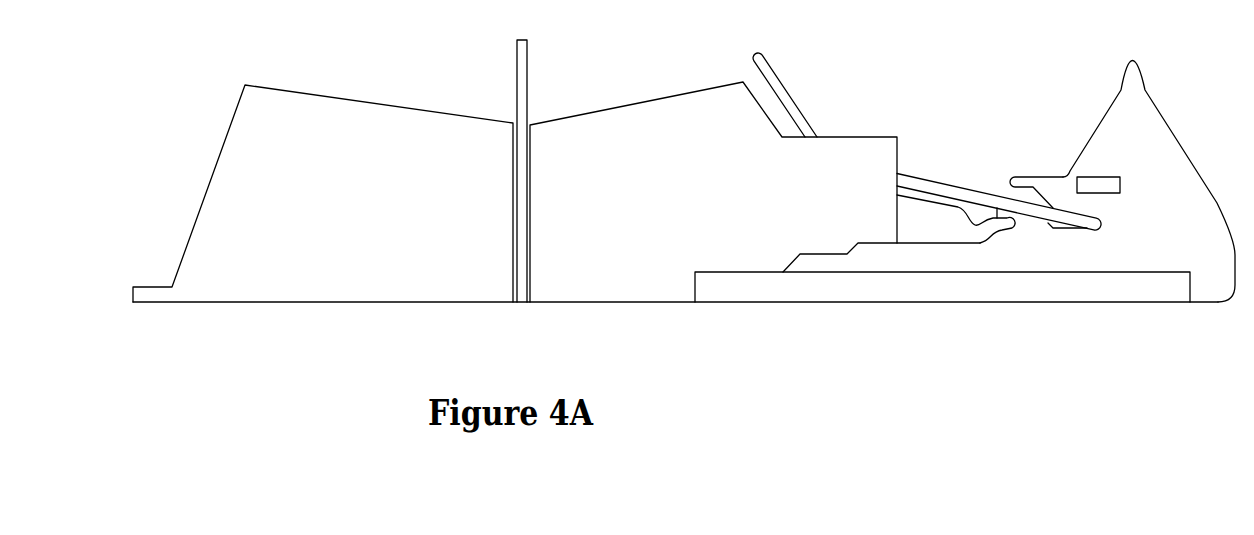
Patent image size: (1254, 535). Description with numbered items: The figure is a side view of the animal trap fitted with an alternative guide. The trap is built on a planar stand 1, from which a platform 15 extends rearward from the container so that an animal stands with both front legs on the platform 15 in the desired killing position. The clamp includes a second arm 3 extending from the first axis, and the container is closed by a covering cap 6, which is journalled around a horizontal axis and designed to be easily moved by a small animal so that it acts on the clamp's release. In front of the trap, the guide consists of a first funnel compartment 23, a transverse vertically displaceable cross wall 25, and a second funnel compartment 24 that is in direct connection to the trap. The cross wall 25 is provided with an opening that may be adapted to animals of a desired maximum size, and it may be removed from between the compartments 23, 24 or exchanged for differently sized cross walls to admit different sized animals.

The stand 1 is at (1037, 288).
The second arm 3 is at (935, 186).
The covering cap 6 is at (927, 230).
The platform 15 is at (815, 263).
The first funnel compartment 23 is at (350, 142).
The second funnel compartment 24 is at (628, 138).
The cross wall 25 is at (520, 102).